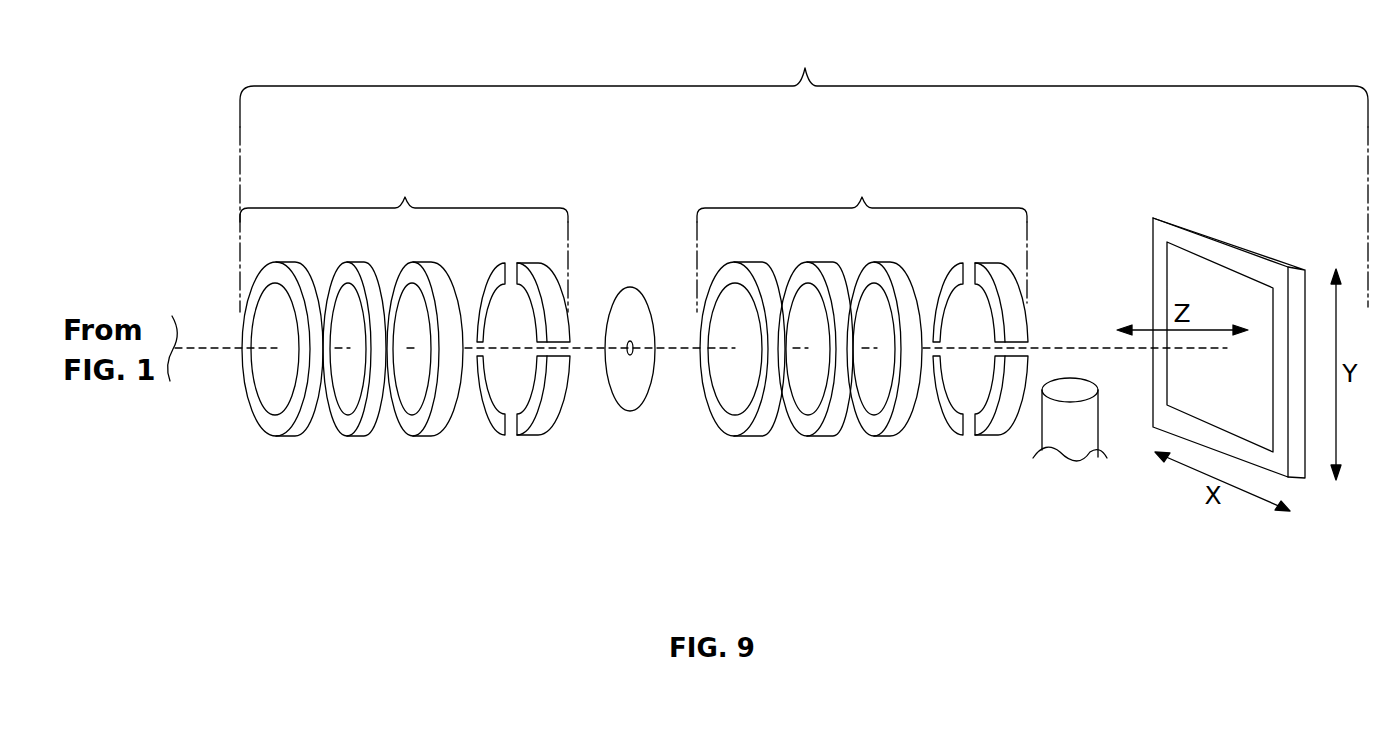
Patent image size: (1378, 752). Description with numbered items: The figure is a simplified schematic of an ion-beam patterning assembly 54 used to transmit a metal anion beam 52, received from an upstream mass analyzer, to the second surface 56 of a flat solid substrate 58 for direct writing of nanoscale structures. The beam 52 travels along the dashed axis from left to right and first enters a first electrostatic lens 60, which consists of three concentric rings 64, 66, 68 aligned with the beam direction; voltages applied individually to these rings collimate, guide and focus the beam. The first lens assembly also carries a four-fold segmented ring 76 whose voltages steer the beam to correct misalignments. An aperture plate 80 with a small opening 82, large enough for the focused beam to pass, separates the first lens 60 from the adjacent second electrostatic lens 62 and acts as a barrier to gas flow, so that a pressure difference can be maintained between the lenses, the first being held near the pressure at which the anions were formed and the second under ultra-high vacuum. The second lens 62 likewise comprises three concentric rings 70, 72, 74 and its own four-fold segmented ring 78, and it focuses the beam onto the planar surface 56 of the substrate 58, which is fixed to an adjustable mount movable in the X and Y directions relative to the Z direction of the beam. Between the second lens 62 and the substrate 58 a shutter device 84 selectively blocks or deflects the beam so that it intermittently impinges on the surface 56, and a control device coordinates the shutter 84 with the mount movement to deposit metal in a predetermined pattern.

The metal anion beam 52 is at (193, 348).
The ion-beam patterning assembly 54 is at (804, 170).
The second surface 56 is at (1183, 270).
The flat solid substrate 58 is at (1218, 234).
The first electrostatic lens 60 is at (405, 334).
The second electrostatic lens 62 is at (862, 334).
The concentric ring 64 is at (290, 437).
The concentric ring 66 is at (358, 437).
The concentric ring 68 is at (417, 437).
The concentric ring 70 is at (747, 437).
The concentric ring 72 is at (818, 437).
The concentric ring 74 is at (873, 437).
The four-fold segmented ring 76 is at (525, 435).
The four-fold segmented ring 78 is at (987, 435).
The aperture plate 80 is at (622, 407).
The small opening 82 is at (627, 346).
The shutter device 84 is at (1040, 427).